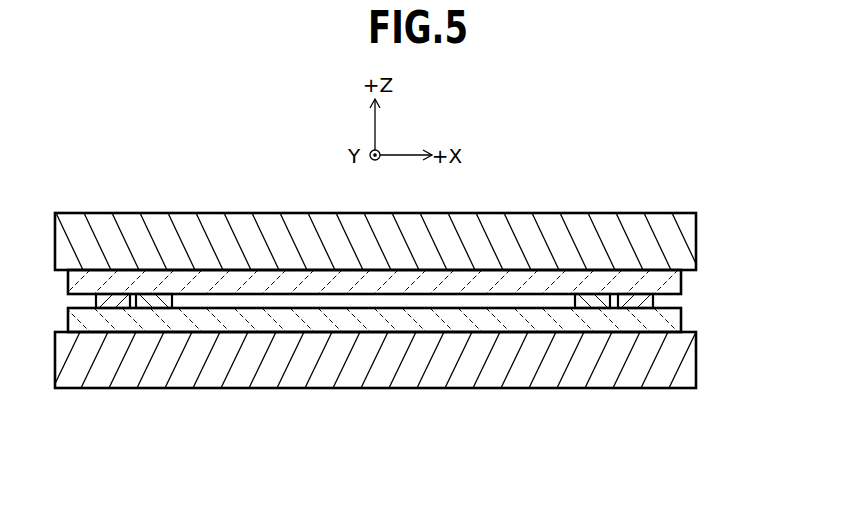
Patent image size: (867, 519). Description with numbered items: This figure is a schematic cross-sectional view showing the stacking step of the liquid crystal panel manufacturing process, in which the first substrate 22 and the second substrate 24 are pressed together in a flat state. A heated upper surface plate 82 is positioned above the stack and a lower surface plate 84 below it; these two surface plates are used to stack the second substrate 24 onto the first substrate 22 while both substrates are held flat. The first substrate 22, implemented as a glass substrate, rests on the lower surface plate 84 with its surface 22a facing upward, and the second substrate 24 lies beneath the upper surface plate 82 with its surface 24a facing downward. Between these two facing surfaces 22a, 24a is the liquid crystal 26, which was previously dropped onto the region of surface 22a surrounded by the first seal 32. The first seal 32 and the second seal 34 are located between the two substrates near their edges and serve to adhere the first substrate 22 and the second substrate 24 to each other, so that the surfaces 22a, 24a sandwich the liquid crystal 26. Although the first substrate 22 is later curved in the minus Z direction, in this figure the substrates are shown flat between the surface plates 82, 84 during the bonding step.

The upper surface plate 82 is at (697, 243).
The lower surface plate 84 is at (697, 356).
The second substrate 24 is at (683, 281).
The first substrate 22 is at (681, 320).
The surface of the second substrate 24a is at (272, 296).
The surface of the first substrate 22a is at (420, 311).
The liquid crystal 26 is at (376, 302).
The first seal 32 is at (155, 305).
The second seal 34 is at (117, 303).